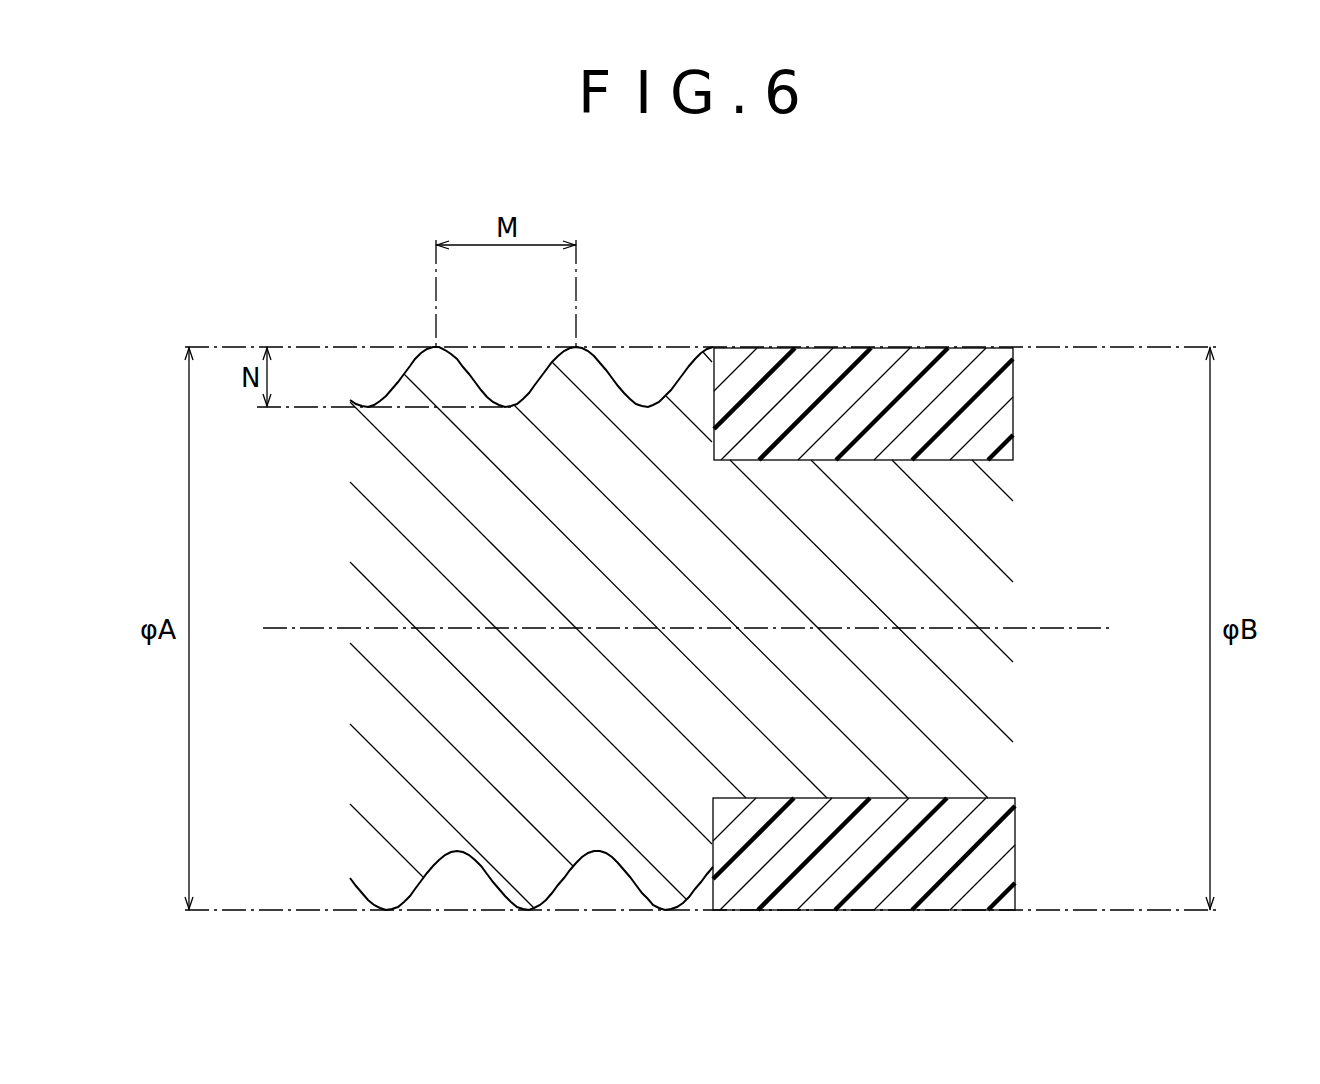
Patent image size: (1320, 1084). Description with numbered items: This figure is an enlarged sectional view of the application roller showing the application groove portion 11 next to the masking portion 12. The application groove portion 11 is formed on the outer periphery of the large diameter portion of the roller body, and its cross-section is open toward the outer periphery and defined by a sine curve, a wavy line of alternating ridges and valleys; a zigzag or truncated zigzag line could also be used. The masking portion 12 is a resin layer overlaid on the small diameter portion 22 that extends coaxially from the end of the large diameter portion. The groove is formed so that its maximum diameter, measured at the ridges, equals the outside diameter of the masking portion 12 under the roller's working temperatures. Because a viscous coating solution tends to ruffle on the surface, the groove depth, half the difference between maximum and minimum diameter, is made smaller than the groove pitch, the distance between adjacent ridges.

The application groove portion 11 is at (584, 346).
The masking portion 12 is at (953, 360).
The small diameter portion 22 is at (933, 542).